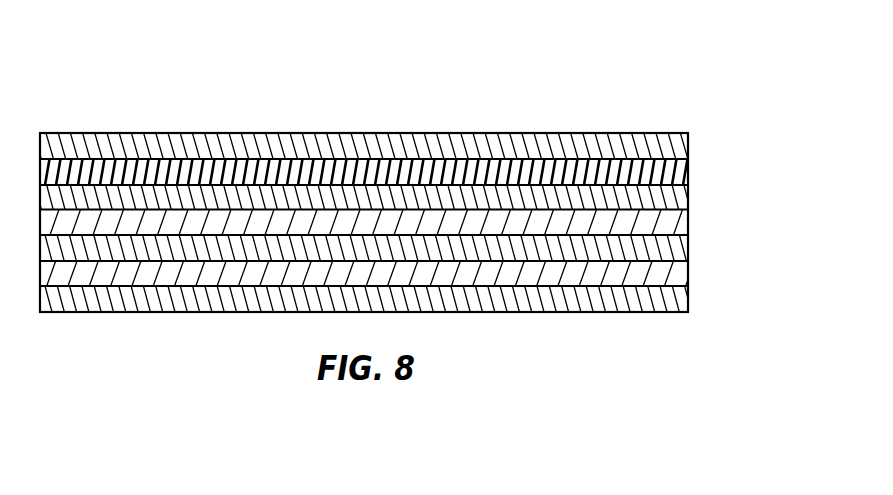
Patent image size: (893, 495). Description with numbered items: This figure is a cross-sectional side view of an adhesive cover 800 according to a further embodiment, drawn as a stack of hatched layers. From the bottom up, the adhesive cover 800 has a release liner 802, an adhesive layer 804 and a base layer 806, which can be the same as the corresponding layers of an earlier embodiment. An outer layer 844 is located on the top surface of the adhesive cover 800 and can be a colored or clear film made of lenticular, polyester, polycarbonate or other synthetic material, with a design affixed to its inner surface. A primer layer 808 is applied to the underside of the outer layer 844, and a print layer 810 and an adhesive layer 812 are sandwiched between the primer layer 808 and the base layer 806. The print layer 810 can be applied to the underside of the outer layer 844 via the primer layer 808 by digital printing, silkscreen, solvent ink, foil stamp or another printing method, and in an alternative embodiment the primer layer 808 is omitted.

The adhesive cover 800 is at (502, 98).
The release liner 802 is at (688, 300).
The adhesive layer 804 is at (688, 273).
The base layer 806 is at (688, 248).
The adhesive layer 812 is at (688, 223).
The print layer 810 is at (688, 196).
The primer layer 808 is at (688, 172).
The outer layer 844 is at (688, 143).